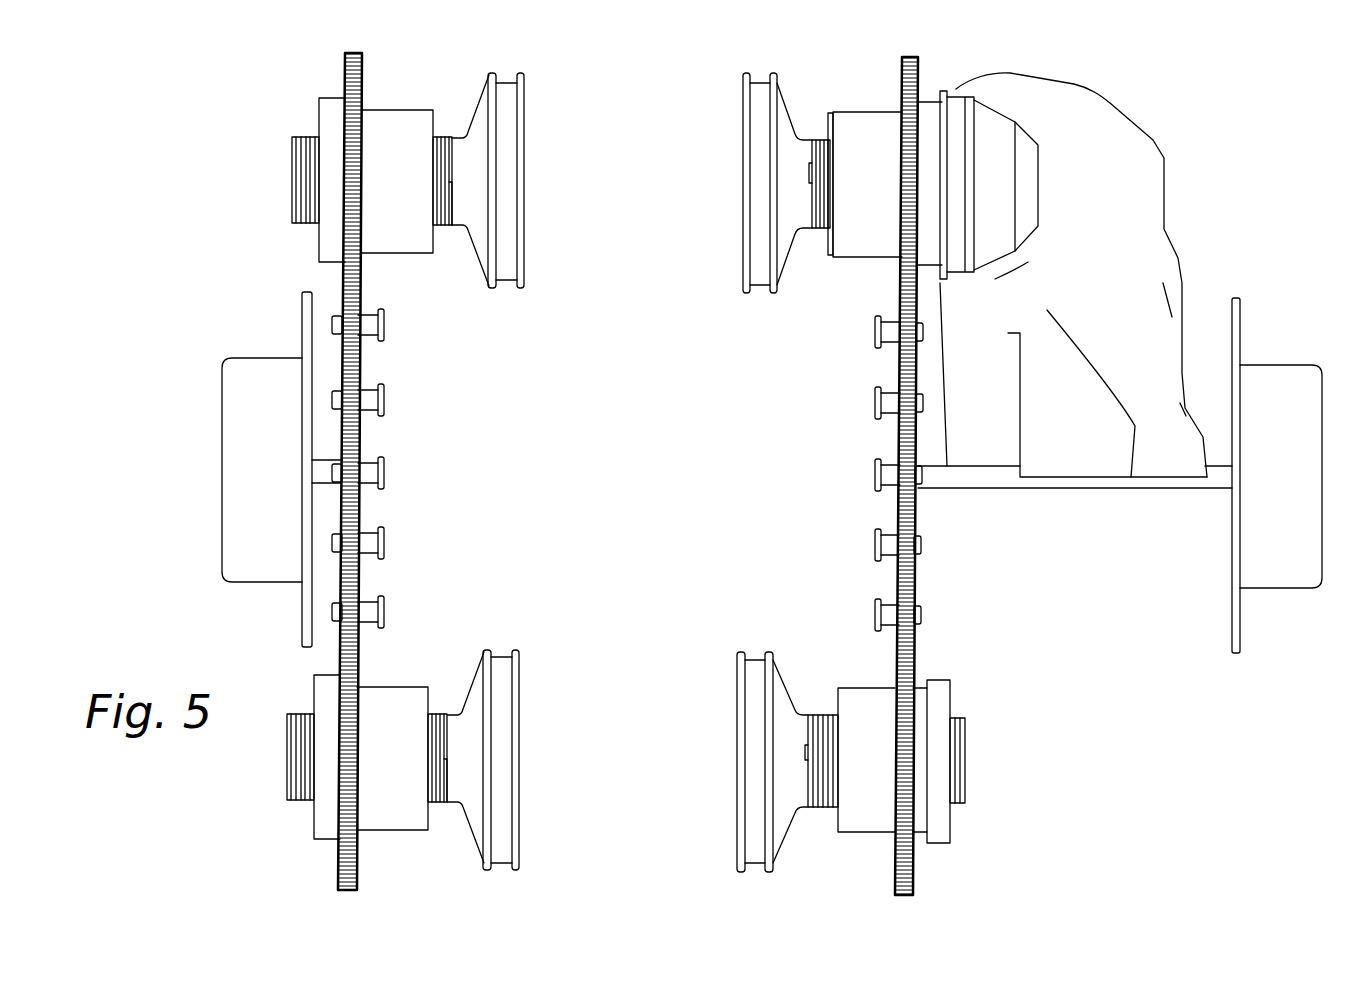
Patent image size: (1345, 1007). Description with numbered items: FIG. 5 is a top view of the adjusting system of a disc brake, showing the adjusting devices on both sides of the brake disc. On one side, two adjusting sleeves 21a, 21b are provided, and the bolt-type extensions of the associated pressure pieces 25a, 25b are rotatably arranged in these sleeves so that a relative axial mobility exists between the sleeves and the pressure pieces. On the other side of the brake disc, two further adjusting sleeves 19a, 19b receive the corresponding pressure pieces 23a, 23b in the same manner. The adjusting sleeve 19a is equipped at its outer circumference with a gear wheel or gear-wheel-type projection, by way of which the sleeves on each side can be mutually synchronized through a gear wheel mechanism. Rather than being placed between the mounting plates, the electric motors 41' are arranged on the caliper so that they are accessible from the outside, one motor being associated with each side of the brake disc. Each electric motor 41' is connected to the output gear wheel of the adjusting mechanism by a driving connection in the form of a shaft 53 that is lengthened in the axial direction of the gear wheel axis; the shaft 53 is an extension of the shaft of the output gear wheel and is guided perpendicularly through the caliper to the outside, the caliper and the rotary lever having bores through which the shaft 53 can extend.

The adjusting sleeve 21b is at (398, 122).
The pressure piece 25b is at (507, 117).
The adjusting sleeve 21a is at (394, 702).
The pressure piece 25a is at (500, 692).
The electric motor 41' is at (738, 456).
The pressure piece 23b is at (791, 131).
The adjusting sleeve 19b is at (953, 100).
The shaft 53 is at (1118, 486).
The pressure piece 23a is at (779, 822).
The adjusting sleeve 19a is at (937, 825).